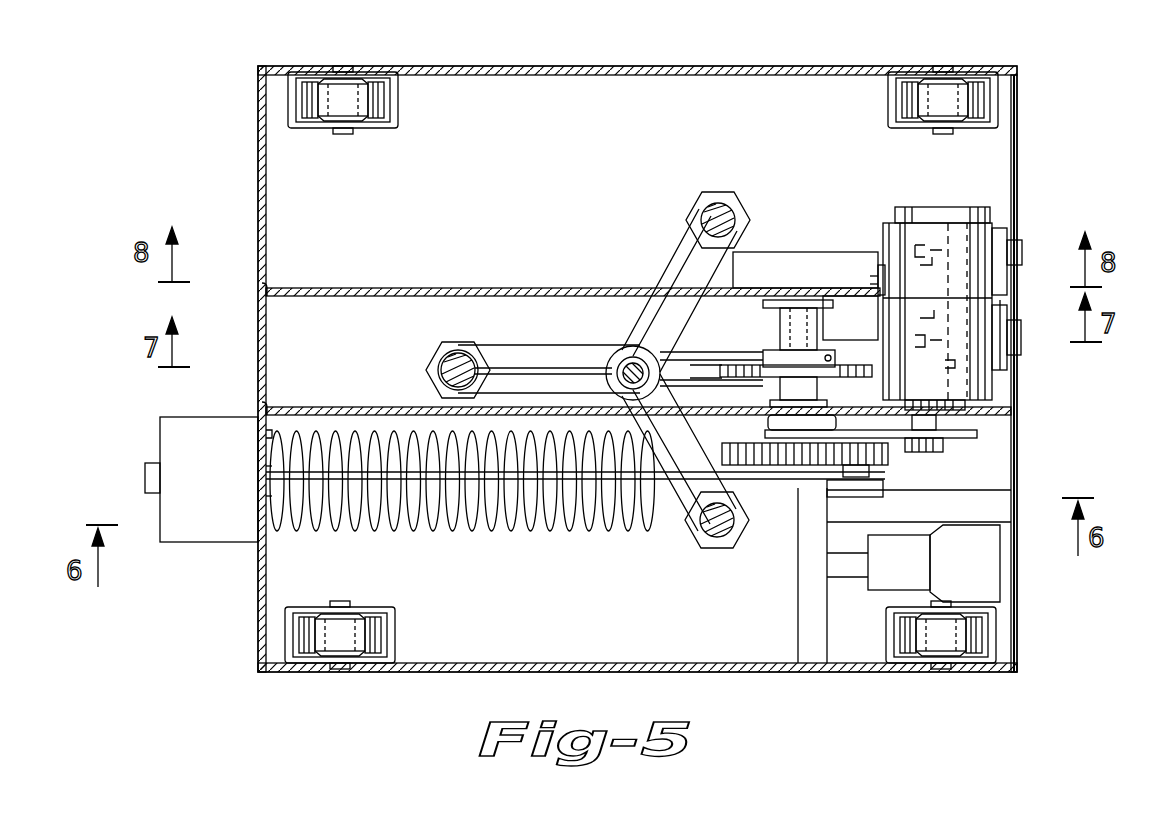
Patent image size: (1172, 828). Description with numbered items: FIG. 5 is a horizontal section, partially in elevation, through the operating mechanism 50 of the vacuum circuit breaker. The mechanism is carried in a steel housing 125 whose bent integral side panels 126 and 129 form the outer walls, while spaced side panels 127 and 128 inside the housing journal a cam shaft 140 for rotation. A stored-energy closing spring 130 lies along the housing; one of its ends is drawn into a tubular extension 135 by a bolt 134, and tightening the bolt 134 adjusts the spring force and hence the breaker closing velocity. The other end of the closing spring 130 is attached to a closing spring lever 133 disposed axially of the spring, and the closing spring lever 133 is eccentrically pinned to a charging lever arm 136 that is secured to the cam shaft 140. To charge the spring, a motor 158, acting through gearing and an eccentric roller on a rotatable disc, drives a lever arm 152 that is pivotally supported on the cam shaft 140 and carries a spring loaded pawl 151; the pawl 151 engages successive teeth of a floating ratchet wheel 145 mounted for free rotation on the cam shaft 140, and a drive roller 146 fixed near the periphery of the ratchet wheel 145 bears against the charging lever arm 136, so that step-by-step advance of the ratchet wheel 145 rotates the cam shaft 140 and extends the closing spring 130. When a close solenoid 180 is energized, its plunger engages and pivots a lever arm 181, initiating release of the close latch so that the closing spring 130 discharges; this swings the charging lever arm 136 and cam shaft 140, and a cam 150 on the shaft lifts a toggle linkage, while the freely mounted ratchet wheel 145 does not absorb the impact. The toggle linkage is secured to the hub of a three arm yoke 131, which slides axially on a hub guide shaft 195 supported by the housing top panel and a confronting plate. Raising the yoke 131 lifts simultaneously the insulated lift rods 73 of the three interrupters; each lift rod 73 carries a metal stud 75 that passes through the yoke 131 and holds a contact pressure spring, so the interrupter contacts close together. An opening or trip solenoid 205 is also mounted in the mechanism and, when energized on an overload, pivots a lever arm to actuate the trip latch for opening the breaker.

The operating mechanism 50 is at (763, 66).
The operating rod 73 is at (716, 212).
The metal stud 75 is at (440, 386).
The housing 125 is at (255, 133).
The side panel 126 is at (520, 67).
The side panel 127 is at (356, 288).
The side panel 128 is at (364, 407).
The side panel 129 is at (745, 673).
The closing spring 130 is at (258, 192).
The three arm yoke 131 is at (574, 338).
The closing spring lever 133 is at (676, 492).
The bolt 134 is at (322, 530).
The tubular extension 135 is at (190, 543).
The charging lever arm 136 is at (808, 492).
The cam shaft 140 is at (797, 318).
The floating ratchet wheel 145 is at (780, 468).
The drive roller 146 is at (863, 472).
The cam 150 is at (776, 360).
The spring loaded pawl 151 is at (896, 452).
The lever arm 152 is at (977, 430).
The motor 158 is at (932, 232).
The close solenoid 180 is at (1000, 232).
The lever arm 181 is at (880, 270).
The hub guide shaft 195 is at (630, 355).
The trip solenoid 205 is at (1000, 352).